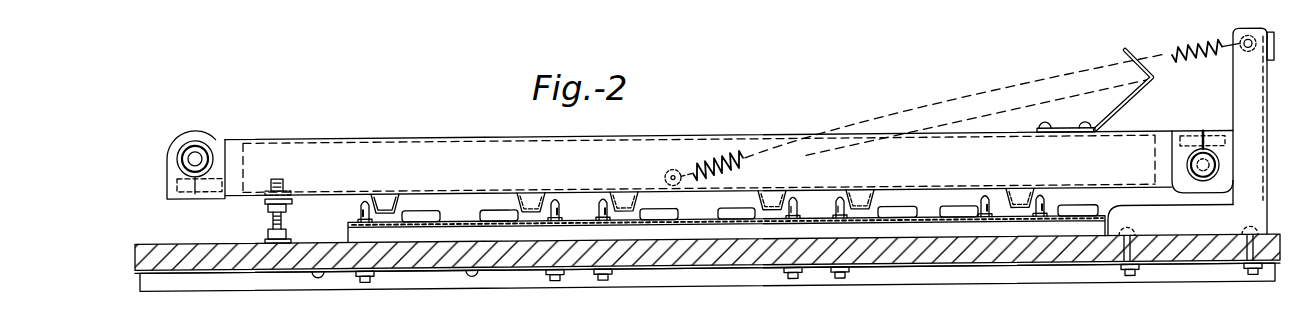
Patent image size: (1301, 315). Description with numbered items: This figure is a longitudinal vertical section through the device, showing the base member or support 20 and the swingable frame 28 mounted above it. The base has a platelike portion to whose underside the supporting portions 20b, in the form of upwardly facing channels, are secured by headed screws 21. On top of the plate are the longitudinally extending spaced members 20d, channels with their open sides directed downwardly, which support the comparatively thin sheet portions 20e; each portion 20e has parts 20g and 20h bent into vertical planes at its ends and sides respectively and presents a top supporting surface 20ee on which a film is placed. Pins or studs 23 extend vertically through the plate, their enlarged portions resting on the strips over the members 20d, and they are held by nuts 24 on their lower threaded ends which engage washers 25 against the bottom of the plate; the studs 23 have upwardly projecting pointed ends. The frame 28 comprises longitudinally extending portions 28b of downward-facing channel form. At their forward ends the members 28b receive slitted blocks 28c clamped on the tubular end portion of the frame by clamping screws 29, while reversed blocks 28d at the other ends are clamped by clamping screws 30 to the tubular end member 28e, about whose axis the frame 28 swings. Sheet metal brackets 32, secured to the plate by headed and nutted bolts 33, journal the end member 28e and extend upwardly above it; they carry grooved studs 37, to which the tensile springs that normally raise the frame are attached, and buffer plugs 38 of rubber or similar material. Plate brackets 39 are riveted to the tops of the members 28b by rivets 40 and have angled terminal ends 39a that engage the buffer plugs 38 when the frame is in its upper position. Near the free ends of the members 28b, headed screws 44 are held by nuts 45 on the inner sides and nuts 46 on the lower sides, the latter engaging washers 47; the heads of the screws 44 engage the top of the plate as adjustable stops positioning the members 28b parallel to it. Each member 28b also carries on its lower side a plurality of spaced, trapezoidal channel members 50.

The base member or support 20 is at (143, 244).
The supporting portions 20b is at (203, 285).
The spaced members 20d is at (1050, 241).
The portions of thin sheet material 20e is at (672, 196).
The top supporting surfaces 20ee is at (450, 222).
The end parts 20g is at (840, 214).
The side parts 20h is at (412, 200).
The headed screws 21 is at (318, 280).
The pins or studs 23 is at (603, 203).
The nuts 24 is at (556, 283).
The washers 25 is at (366, 278).
The member or frame 28 is at (478, 138).
The longitudinally extending portions 28b is at (343, 139).
The blocks 28c is at (215, 197).
The blocks 28d is at (204, 140).
The end member 28e is at (1205, 195).
The clamping screws 29 is at (194, 193).
The clamping screws 30 is at (1204, 140).
The brackets 32 is at (1230, 72).
The headed and nutted bolts 33 is at (1127, 284).
The grooved studs 37 is at (1244, 50).
The buffer plug 38 is at (1256, 74).
The plate brackets 39 is at (1140, 110).
The terminal end 39a is at (1122, 58).
The rivets 40 is at (1086, 133).
The headed screws 44 is at (288, 226).
The nuts 45 is at (290, 190).
The nuts 46 is at (272, 212).
The washers 47 is at (294, 200).
The spaced members 50 is at (864, 198).